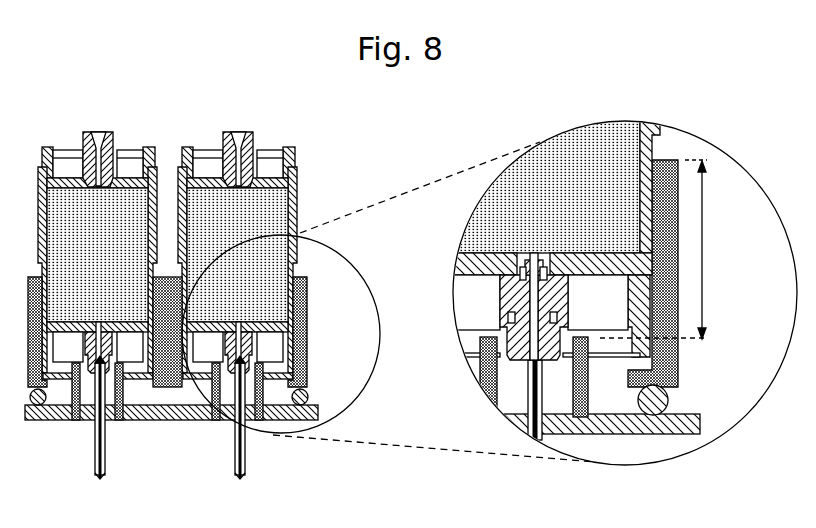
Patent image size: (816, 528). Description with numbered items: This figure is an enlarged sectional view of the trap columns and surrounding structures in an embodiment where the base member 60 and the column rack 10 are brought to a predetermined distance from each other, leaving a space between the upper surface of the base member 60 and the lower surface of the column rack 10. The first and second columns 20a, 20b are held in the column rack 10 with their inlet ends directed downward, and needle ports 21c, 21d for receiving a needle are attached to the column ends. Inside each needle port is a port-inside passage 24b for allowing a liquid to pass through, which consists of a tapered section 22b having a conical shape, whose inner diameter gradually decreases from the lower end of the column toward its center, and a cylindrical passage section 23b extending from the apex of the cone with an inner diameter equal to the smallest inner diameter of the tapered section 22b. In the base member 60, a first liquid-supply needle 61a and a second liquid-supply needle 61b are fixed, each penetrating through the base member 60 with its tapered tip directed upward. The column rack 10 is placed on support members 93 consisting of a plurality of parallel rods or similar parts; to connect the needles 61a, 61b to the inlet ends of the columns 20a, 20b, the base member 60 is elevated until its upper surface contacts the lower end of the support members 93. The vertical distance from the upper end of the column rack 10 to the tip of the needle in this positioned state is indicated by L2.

The first column 20a is at (62, 128).
The second column 20b is at (283, 128).
The needle port 21c is at (110, 132).
The needle port 21d is at (232, 132).
The column rack 10 is at (307, 305).
The support members 93 is at (38, 406).
The base member 60 is at (172, 421).
The first liquid-supply needle 61a is at (106, 466).
The second liquid-supply needle 61b is at (231, 462).
The port-inside passage 24b is at (402, 225).
The passage section 23b is at (500, 290).
The tapered section 22b is at (506, 326).
The vertical distance from the upper end of the column rack to the tip of the needle L2 is at (655, 249).